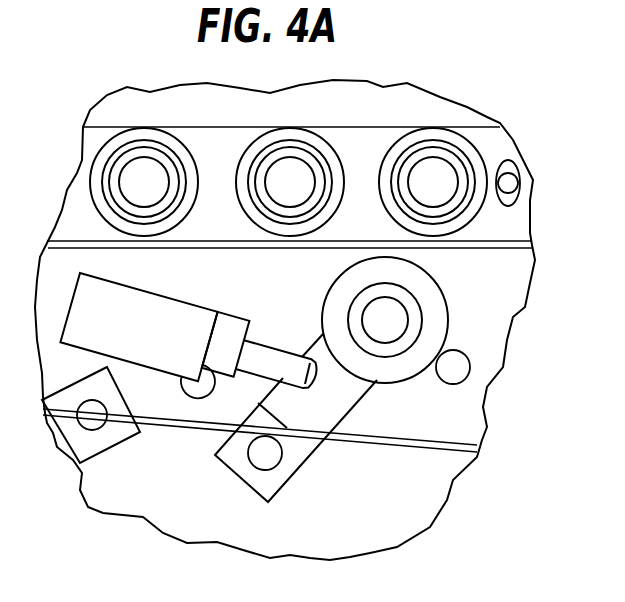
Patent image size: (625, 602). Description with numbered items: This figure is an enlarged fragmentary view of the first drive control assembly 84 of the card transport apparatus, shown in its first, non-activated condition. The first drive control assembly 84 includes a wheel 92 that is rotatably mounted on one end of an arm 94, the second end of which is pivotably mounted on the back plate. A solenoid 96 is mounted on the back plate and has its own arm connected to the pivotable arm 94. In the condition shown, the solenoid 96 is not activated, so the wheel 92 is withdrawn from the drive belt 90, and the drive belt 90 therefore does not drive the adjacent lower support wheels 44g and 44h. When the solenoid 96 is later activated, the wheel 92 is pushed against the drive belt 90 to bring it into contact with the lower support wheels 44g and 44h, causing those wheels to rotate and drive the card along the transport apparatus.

The lower support wheel 44g is at (271, 146).
The lower support wheel 44h is at (416, 146).
The first drive control assembly 84 is at (292, 312).
The drive belt 90 is at (118, 247).
The wheel 92 is at (427, 287).
The arm 94 is at (347, 395).
The solenoid 96 is at (182, 305).